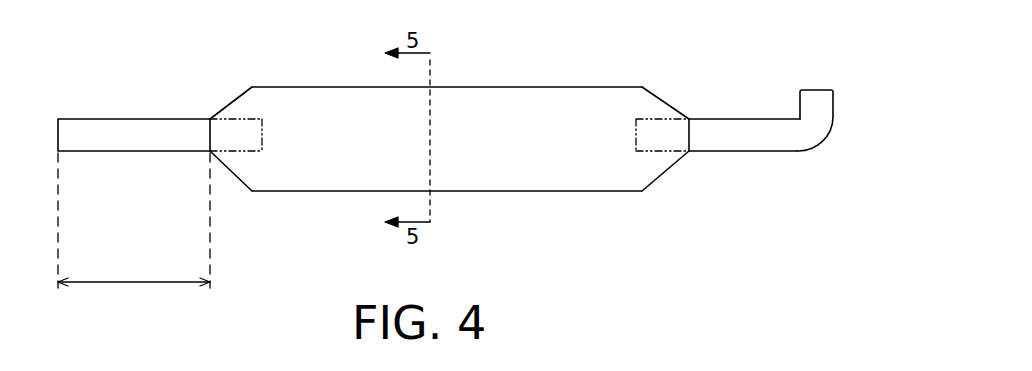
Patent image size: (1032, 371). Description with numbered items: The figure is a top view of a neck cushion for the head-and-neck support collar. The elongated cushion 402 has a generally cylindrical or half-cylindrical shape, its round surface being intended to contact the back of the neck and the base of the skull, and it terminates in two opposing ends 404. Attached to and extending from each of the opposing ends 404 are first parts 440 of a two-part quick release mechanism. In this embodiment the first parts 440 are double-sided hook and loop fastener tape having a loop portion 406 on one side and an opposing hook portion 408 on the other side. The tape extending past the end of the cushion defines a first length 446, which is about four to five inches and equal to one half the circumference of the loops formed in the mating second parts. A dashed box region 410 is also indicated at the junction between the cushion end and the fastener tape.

The elongated cushion 402 is at (309, 87).
The opposing ends 404 is at (209, 119).
The loop portion 406 is at (775, 128).
The hook portion 408 is at (818, 111).
The shoulder 410 is at (240, 116).
The first parts 440 is at (108, 151).
The first length 446 is at (118, 282).